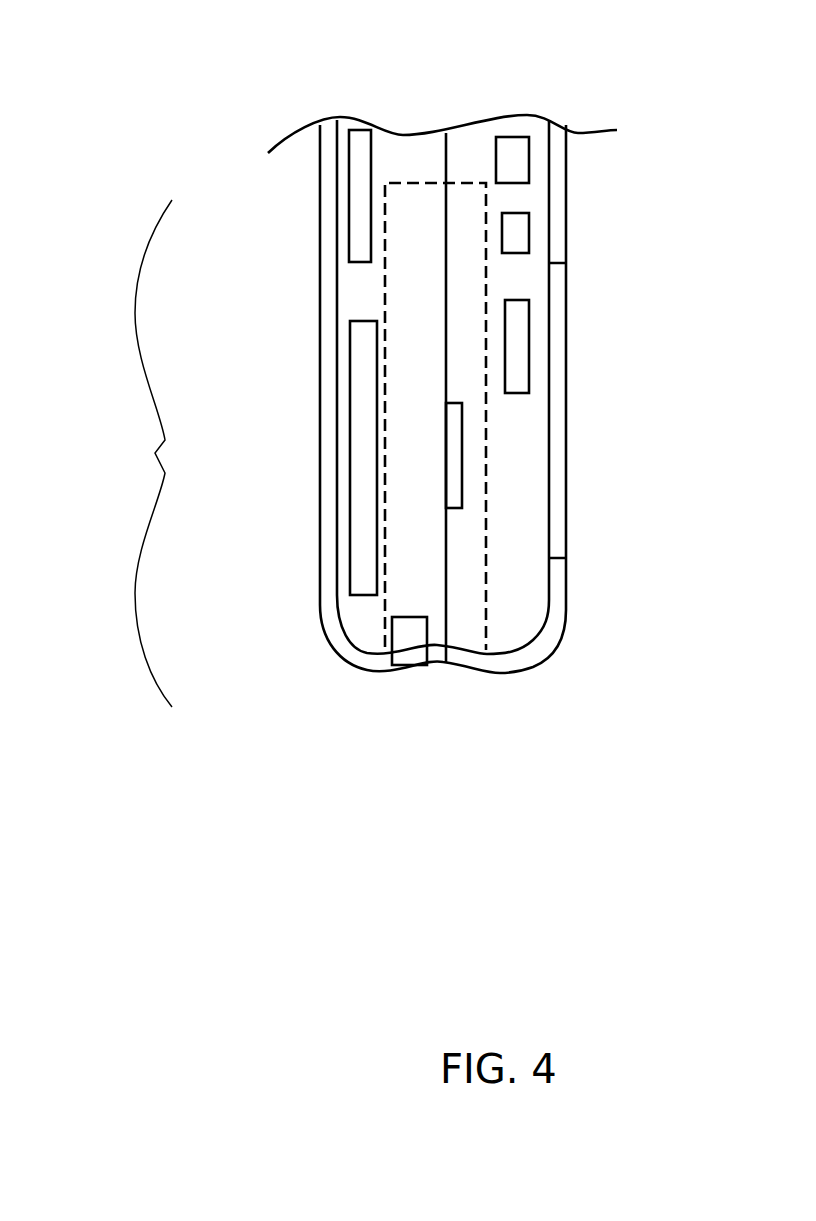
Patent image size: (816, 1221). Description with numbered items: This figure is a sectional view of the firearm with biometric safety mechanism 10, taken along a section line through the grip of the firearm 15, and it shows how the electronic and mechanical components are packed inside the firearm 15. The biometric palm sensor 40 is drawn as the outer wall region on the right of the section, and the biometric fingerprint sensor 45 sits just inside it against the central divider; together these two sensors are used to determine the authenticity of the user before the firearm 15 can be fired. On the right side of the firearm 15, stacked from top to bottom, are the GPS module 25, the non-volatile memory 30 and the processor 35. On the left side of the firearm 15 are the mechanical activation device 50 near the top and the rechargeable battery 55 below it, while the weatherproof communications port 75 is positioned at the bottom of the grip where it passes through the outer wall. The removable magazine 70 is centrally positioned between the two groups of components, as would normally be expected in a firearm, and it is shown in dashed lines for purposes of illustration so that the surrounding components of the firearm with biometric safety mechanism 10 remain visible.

The firearm with biometric safety mechanism 10 is at (223, 757).
The firearm 15 is at (150, 443).
The GPS module 25 is at (513, 168).
The non-volatile memory 30 is at (522, 237).
The processor 35 is at (515, 347).
The biometric palm sensor 40 is at (557, 415).
The biometric fingerprint sensor 45 is at (453, 471).
The mechanical activation device 50 is at (360, 232).
The rechargeable battery 55 is at (365, 525).
The removable magazine 70 is at (384, 286).
The weatherproof communications port 75 is at (407, 653).